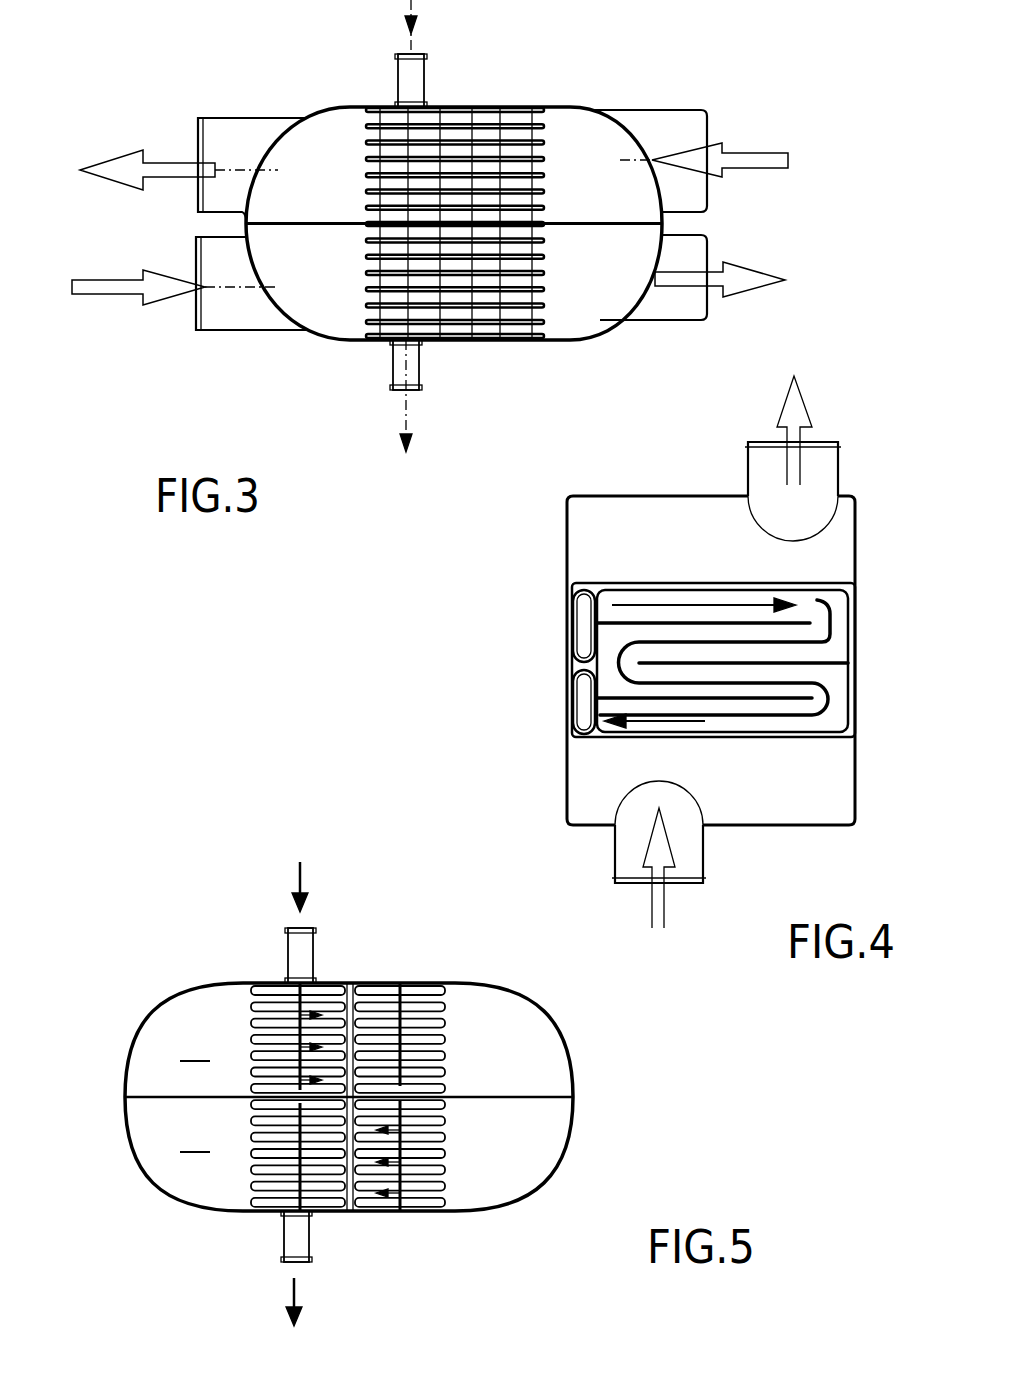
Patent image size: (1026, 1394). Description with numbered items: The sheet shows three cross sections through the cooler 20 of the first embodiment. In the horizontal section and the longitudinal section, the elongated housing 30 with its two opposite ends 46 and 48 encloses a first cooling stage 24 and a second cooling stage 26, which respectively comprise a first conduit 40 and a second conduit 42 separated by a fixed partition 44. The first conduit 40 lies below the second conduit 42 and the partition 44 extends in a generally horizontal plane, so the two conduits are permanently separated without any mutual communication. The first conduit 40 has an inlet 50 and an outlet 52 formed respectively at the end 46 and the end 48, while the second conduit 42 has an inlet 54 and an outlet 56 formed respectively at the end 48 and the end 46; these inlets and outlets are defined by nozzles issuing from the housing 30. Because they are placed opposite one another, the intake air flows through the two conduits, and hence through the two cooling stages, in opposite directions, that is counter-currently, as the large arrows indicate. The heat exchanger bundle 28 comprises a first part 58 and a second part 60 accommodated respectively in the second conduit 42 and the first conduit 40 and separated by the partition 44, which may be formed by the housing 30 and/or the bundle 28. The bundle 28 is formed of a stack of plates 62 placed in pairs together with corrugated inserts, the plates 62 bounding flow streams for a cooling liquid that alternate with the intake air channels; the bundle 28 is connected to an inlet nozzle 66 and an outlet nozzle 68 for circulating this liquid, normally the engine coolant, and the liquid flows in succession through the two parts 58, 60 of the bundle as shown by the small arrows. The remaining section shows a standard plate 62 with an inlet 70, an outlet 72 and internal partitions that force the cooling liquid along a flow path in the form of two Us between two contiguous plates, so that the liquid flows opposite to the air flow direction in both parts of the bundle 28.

In FIG. 3, the cooler 20 is at (318, 350).
In FIG. 5, the cooler 20 is at (188, 1226).
In FIG. 3, the first cooling stage 24 is at (588, 290).
In FIG. 5, the first cooling stage 24 is at (522, 1142).
In FIG. 3, the second cooling stage 26 is at (580, 138).
In FIG. 5, the second cooling stage 26 is at (518, 1043).
In FIG. 3, the heat exchanger bundle 28 is at (481, 341).
In FIG. 4, the heat exchanger bundle 28 is at (612, 752).
In FIG. 5, the heat exchanger bundle 28 is at (432, 1214).
In FIG. 3, the housing 30 is at (333, 108).
In FIG. 4, the housing 30 is at (567, 548).
In FIG. 5, the housing 30 is at (230, 985).
In FIG. 3, the first conduit 40 is at (337, 306).
In FIG. 5, the first conduit 40 is at (195, 1138).
In FIG. 3, the second conduit 42 is at (303, 152).
In FIG. 5, the second conduit 42 is at (195, 1048).
In FIG. 3, the partition 44 is at (334, 225).
In FIG. 5, the partition 44 is at (130, 1100).
In FIG. 3, the end 46 is at (272, 306).
In FIG. 5, the end 46 is at (140, 1042).
In FIG. 3, the end 48 is at (645, 140).
In FIG. 5, the end 48 is at (572, 1058).
In FIG. 3, the inlet 50 is at (190, 330).
In FIG. 3, the outlet 52 is at (656, 328).
In FIG. 3, the inlet 54 is at (707, 122).
In FIG. 3, the outlet 56 is at (223, 118).
In FIG. 3, the first part 58 is at (498, 142).
In FIG. 5, the first part 58 is at (412, 1040).
In FIG. 3, the second part 60 is at (513, 300).
In FIG. 5, the second part 60 is at (438, 1190).
In FIG. 4, the plate 62 is at (818, 740).
In FIG. 3, the inlet nozzle 66 is at (398, 72).
In FIG. 5, the inlet nozzle 66 is at (288, 947).
In FIG. 3, the outlet nozzle 68 is at (393, 385).
In FIG. 5, the outlet nozzle 68 is at (284, 1238).
In FIG. 4, the inlet 70 is at (576, 630).
In FIG. 4, the outlet 72 is at (576, 703).